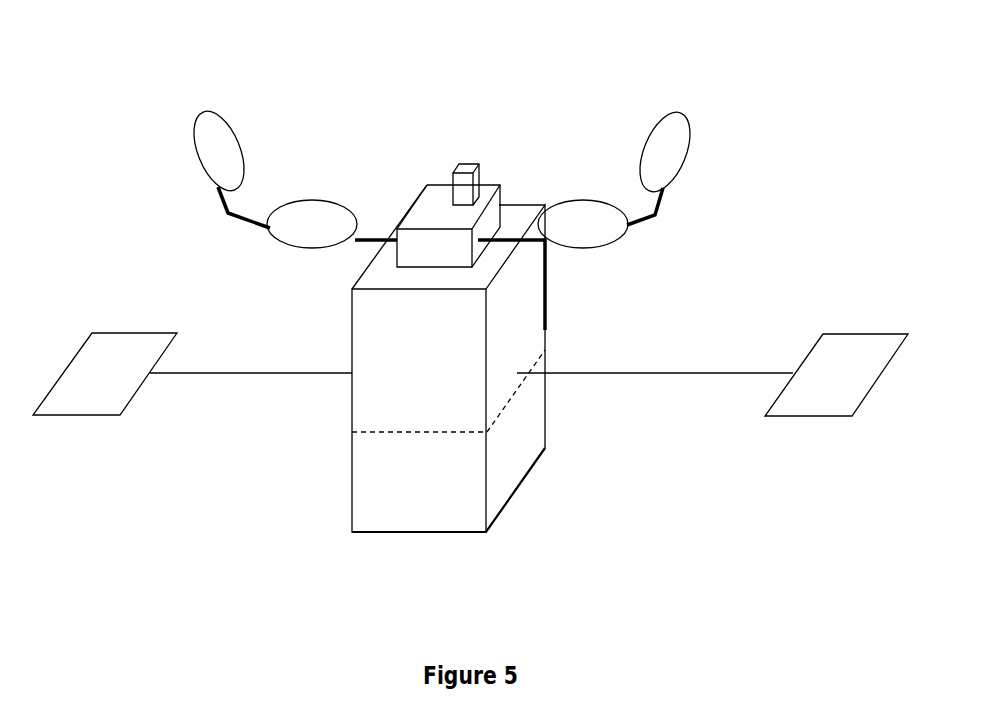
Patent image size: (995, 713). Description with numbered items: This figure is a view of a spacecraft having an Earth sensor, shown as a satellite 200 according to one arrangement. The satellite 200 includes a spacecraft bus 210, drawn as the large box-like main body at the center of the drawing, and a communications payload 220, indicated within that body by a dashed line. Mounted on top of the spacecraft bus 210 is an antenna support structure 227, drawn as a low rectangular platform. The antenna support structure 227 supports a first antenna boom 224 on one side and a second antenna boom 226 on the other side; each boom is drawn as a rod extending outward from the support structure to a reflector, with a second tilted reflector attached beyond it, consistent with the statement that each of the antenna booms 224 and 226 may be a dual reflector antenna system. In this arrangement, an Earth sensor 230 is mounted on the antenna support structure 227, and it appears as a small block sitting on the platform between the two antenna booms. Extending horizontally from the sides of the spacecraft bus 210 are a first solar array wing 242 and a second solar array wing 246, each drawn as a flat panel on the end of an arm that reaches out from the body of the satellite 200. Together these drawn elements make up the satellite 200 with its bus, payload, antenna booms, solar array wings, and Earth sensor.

The satellite 200 is at (207, 62).
The spacecraft bus 210 is at (358, 495).
The communications payload 220 is at (367, 446).
The first antenna boom 224 is at (610, 178).
The second antenna boom 226 is at (285, 172).
The antenna support structure 227 is at (422, 198).
The Earth sensor 230 is at (467, 162).
The first solar array wing 242 is at (78, 417).
The second solar array wing 246 is at (818, 417).